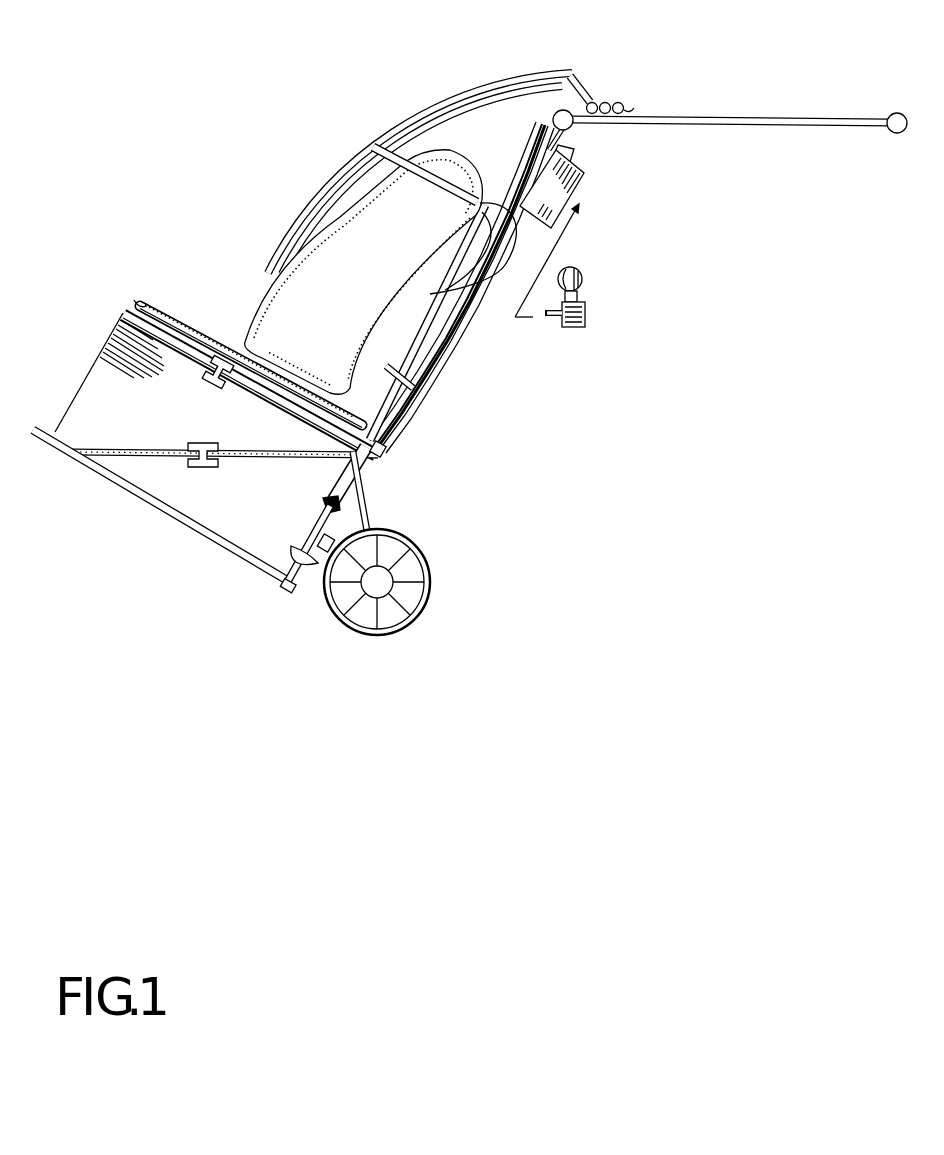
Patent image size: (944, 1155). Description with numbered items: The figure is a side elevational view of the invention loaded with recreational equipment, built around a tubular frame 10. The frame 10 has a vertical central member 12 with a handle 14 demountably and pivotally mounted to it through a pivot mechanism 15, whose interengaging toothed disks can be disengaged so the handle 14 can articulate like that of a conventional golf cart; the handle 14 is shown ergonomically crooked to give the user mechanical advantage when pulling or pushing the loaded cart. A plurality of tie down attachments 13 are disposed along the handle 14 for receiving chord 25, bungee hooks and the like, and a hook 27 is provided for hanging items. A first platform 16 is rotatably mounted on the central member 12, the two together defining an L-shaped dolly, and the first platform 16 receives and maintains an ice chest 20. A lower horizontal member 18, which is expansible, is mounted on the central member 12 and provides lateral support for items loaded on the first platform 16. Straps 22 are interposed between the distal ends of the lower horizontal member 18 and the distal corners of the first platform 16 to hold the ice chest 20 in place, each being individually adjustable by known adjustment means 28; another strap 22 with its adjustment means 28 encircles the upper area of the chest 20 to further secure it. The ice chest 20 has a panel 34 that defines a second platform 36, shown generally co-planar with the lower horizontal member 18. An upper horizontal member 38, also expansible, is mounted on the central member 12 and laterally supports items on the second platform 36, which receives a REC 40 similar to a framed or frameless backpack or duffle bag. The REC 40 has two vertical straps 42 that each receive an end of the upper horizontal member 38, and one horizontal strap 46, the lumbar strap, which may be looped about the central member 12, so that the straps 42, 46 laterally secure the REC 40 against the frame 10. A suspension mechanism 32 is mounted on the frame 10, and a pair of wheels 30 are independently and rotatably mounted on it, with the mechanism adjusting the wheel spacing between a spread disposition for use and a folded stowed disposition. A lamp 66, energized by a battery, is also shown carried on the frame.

The tubular frame 10 is at (529, 347).
The vertical central member 12 is at (293, 592).
The tie down attachments 13 is at (612, 101).
The handle 14 is at (742, 126).
The pivot mechanism 15 is at (572, 128).
The first platform 16 is at (220, 552).
The lower horizontal member 18 is at (383, 456).
The ice chest 20 is at (134, 431).
The straps 22 is at (292, 410).
The chord 25 is at (586, 80).
The hook 27 is at (632, 110).
The adjustment means 28 is at (212, 377).
The wheels 30 is at (430, 590).
The suspension mechanism 32 is at (405, 543).
The panel 34 is at (135, 300).
The second platform 36 is at (155, 298).
The upper horizontal member 38 is at (498, 268).
The REC 40 is at (252, 322).
The vertical straps 42 is at (455, 328).
The horizontal strap 46 is at (420, 387).
The lamp 66 is at (588, 320).